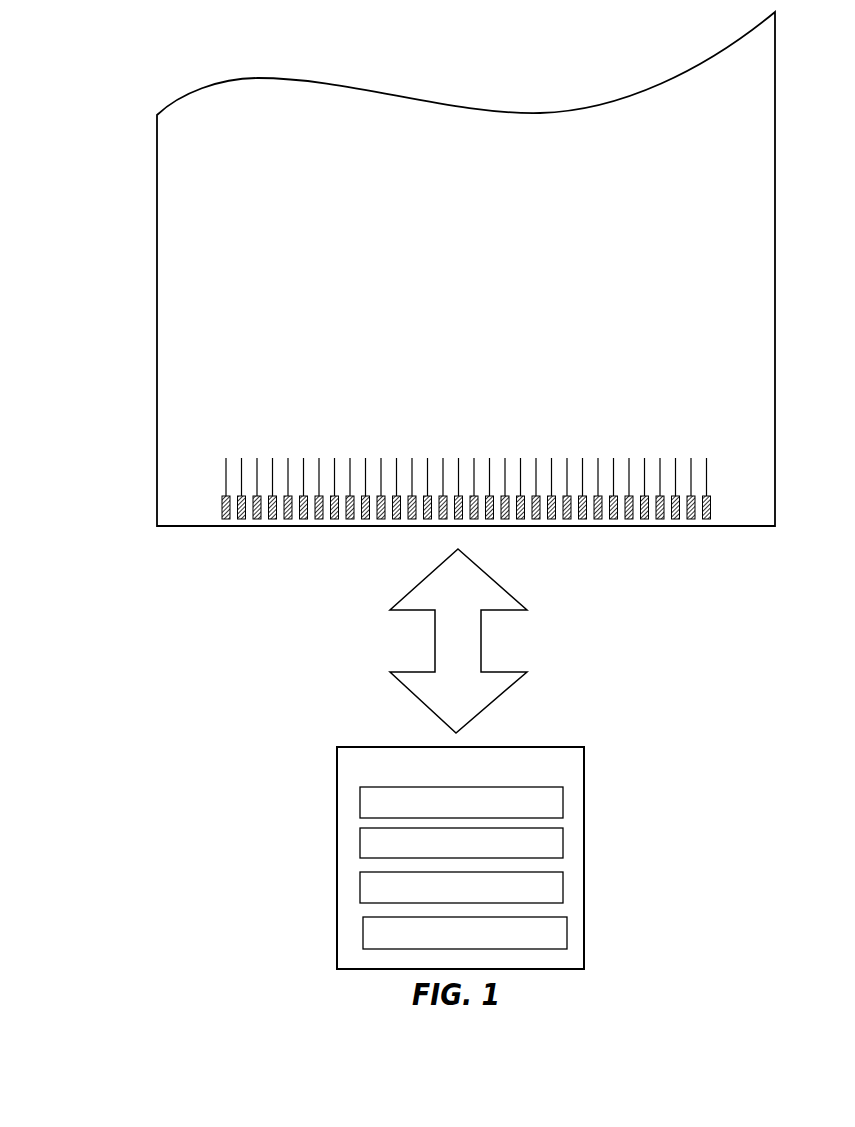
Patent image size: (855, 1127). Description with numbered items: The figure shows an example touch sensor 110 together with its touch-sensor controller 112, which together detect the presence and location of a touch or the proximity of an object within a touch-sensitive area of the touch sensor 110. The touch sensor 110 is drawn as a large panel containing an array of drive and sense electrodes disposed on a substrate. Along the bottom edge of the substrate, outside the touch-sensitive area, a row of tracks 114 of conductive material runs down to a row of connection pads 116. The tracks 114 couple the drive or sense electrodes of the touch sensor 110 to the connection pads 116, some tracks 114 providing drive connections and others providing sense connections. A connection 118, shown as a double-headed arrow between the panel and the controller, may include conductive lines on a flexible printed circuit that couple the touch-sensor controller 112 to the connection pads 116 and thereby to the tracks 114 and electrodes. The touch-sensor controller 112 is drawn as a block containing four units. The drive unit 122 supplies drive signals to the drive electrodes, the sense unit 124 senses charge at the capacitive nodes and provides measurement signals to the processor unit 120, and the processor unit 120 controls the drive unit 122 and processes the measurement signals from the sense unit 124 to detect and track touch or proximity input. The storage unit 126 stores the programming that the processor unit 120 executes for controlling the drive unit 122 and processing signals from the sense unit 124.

The touch sensor 110 is at (207, 202).
The touch-sensor controller 112 is at (382, 858).
The tracks 114 is at (222, 485).
The connection pads 116 is at (218, 505).
The connection 118 is at (433, 664).
The processor unit 120 is at (461, 802).
The drive unit 122 is at (461, 843).
The sense unit 124 is at (461, 887).
The storage unit 126 is at (465, 933).